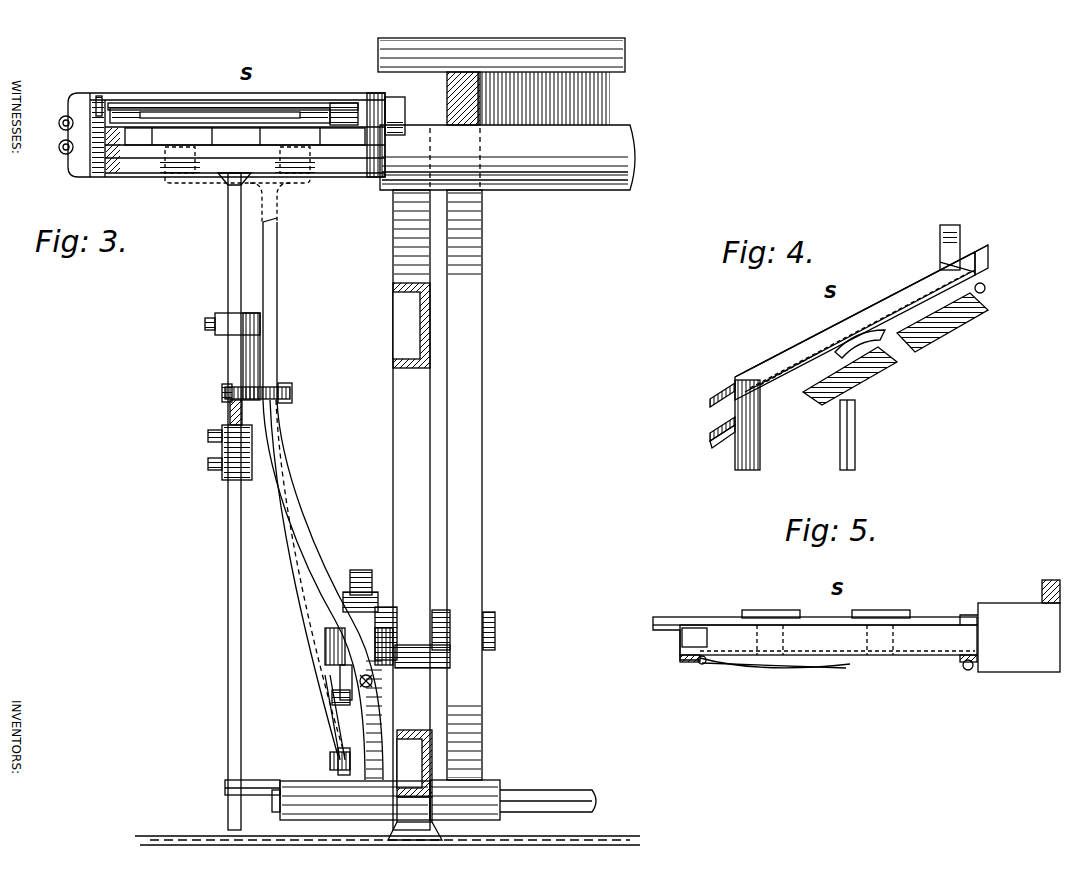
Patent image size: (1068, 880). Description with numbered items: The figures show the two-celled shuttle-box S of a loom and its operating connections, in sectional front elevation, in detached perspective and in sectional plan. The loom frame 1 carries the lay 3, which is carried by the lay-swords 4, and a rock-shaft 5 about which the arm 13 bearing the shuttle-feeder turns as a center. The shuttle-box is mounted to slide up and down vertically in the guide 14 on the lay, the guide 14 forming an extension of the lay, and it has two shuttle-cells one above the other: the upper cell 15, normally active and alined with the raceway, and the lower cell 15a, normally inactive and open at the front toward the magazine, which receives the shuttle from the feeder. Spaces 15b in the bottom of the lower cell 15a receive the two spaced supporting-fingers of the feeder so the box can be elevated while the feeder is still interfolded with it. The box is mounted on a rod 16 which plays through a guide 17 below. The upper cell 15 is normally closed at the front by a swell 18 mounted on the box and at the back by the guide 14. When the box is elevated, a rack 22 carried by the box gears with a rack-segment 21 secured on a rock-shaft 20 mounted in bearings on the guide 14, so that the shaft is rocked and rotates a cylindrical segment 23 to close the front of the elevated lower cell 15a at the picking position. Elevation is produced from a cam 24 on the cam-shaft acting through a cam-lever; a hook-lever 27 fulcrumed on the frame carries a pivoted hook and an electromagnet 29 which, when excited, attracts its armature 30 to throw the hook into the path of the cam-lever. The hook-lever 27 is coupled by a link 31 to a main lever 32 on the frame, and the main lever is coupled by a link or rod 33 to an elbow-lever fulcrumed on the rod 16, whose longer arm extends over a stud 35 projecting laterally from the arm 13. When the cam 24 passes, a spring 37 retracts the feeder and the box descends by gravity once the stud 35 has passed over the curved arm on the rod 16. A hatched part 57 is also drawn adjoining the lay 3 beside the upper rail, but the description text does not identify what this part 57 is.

In FIG. 3, the frame of the loom 1 is at (394, 444).
In FIG. 3, the lay 3 is at (507, 157).
In FIG. 5, the lay 3 is at (1010, 626).
In FIG. 3, the lay-swords 4 is at (484, 455).
In FIG. 3, the rock-shaft 5 is at (558, 792).
In FIG. 3, the arm 13 is at (310, 566).
In FIG. 3, the guide 14 is at (66, 160).
In FIG. 5, the guide 14 is at (680, 645).
In FIG. 4, the upper cell 15 is at (735, 392).
In FIG. 5, the upper cell 15 is at (828, 632).
In FIG. 3, the lower cell 15a is at (245, 142).
In FIG. 4, the lower cell 15a is at (735, 428).
In FIG. 4, the spaces 15b is at (808, 404).
In FIG. 3, the rod 16 is at (229, 278).
In FIG. 4, the rod 16 is at (856, 456).
In FIG. 3, the guide 17 is at (261, 786).
In FIG. 3, the swell 18 is at (340, 120).
In FIG. 4, the swell 18 is at (882, 340).
In FIG. 5, the swell 18 is at (872, 660).
In FIG. 3, the rock-shaft 20 is at (125, 101).
In FIG. 3, the rack-segment 21 is at (92, 86).
In FIG. 3, the rack 22 is at (60, 124).
In FIG. 3, the cylindrical segment 23 is at (182, 108).
In FIG. 3, the cam 24 is at (362, 570).
In FIG. 3, the hook-lever 27 is at (347, 593).
In FIG. 3, the electromagnet 29 is at (325, 643).
In FIG. 3, the armature 30 is at (340, 678).
In FIG. 3, the link 31 is at (338, 722).
In FIG. 3, the main lever 32 is at (334, 760).
In FIG. 3, the link or rod 33 is at (297, 598).
In FIG. 3, the stud 35 is at (226, 396).
In FIG. 3, the spring 37 is at (372, 686).
In FIG. 3, the packing 57 is at (598, 103).